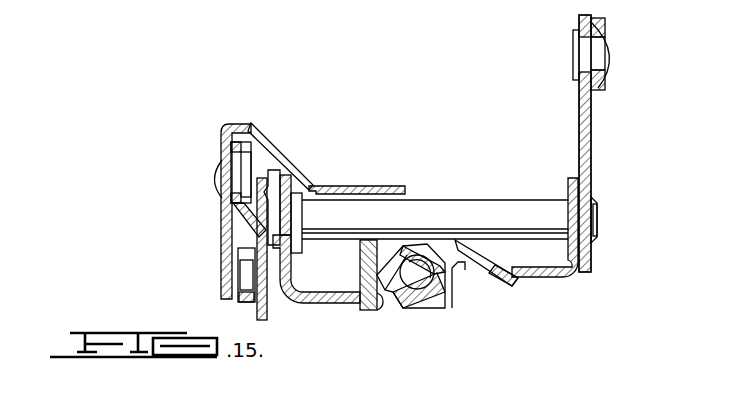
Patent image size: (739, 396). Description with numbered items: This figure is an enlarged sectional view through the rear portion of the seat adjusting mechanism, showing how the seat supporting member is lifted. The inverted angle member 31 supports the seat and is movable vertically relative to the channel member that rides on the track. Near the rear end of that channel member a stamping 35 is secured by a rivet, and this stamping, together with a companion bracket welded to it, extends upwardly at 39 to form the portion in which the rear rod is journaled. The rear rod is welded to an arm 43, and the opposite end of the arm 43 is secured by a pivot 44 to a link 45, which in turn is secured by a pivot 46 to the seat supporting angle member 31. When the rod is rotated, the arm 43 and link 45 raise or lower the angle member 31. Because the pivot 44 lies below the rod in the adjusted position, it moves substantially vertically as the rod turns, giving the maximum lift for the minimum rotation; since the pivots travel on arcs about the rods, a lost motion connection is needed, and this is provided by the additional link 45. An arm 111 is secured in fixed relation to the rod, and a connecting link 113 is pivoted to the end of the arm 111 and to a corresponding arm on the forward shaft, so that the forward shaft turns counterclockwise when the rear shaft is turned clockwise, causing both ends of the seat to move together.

The inverted angle member 31 is at (223, 260).
The stamping 35 is at (543, 280).
The upwardly extending portion of brackets 39 is at (308, 178).
The arm 43 is at (265, 248).
The pivot 44 is at (280, 280).
The link 45 is at (231, 213).
The pivot 46 is at (267, 157).
The arm 111 is at (585, 122).
The connecting link 113 is at (605, 84).